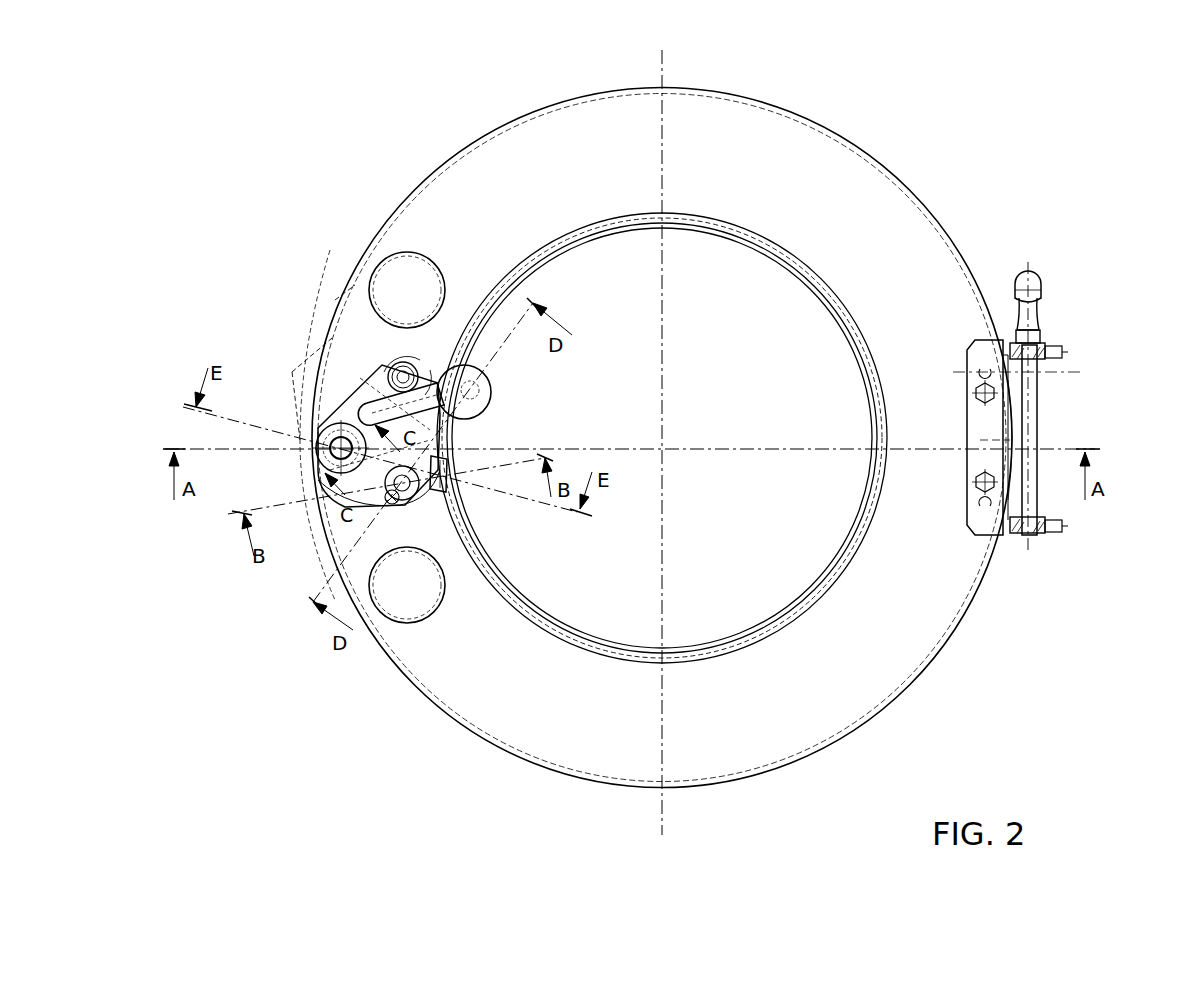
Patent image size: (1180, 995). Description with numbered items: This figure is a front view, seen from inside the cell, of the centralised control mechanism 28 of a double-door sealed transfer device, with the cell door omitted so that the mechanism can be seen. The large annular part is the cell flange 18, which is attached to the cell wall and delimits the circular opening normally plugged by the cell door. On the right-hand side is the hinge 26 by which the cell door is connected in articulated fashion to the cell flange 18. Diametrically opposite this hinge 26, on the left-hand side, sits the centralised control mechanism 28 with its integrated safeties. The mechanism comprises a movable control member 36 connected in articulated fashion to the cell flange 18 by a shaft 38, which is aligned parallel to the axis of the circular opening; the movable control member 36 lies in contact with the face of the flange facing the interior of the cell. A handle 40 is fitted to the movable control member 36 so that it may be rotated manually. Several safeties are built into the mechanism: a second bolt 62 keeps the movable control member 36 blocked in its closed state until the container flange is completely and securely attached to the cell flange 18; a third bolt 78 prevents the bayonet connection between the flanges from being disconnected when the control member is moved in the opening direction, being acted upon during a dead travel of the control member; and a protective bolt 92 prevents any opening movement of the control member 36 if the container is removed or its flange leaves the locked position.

The cell flange 18 is at (875, 195).
The hinge 26 is at (1058, 405).
The centralised control mechanism 28 is at (413, 422).
The movable control member 36 is at (320, 535).
The shaft 38 is at (316, 456).
The handle 40 is at (492, 387).
The second bolt 62 is at (423, 500).
The third bolt 78 is at (415, 355).
The protective bolt 92 is at (403, 508).